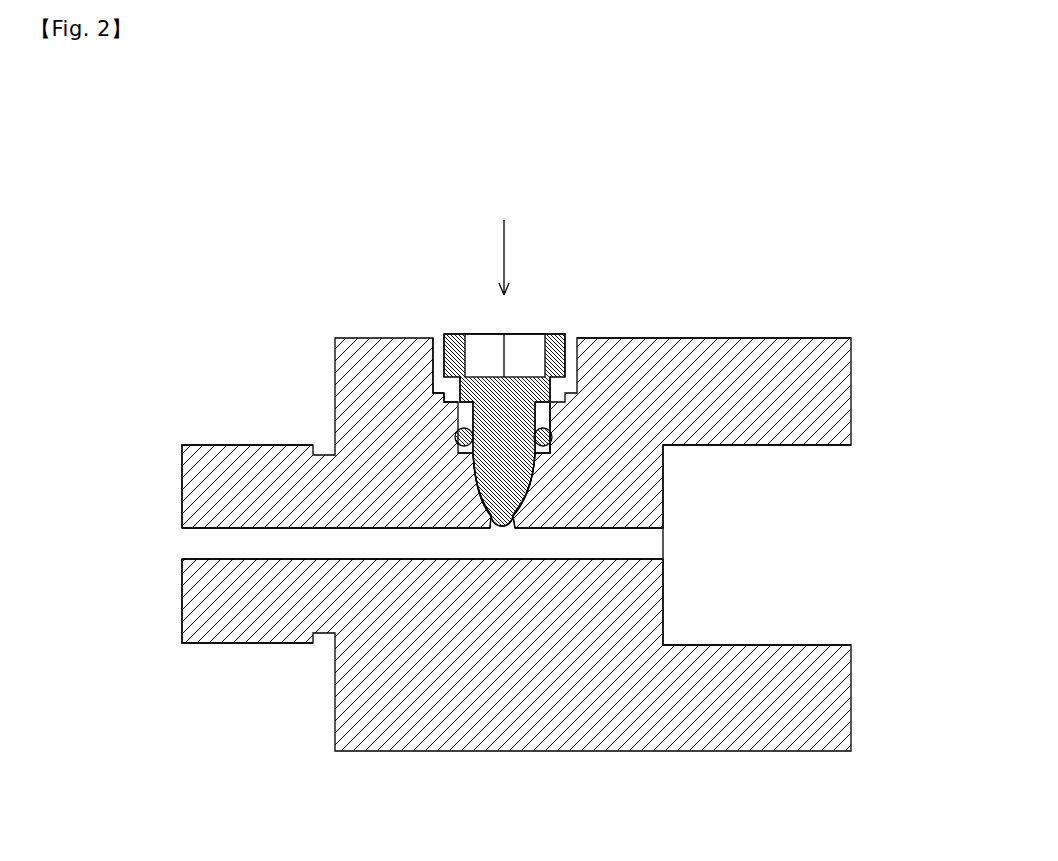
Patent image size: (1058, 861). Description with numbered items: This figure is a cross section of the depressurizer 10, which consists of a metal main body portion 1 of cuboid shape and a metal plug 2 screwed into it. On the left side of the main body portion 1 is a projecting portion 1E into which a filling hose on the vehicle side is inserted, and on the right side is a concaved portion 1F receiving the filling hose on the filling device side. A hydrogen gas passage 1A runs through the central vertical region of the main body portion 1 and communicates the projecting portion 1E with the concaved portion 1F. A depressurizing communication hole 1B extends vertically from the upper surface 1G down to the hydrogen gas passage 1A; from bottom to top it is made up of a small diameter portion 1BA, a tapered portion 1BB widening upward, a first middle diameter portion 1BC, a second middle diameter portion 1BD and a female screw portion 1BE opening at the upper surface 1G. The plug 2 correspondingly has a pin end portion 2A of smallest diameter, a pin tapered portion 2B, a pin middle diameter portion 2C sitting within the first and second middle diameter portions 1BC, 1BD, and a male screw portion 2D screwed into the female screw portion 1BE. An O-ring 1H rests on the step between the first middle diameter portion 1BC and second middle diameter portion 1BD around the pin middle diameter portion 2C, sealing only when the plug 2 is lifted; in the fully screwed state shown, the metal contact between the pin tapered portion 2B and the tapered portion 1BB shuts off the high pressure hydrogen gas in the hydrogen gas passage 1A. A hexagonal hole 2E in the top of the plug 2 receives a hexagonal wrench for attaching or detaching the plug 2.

The depressurizer 10 is at (735, 237).
The main body portion 1 is at (803, 338).
The hydrogen gas passage 1A is at (386, 559).
The depressurizing communication hole 1B is at (485, 520).
The small diameter portion 1BA is at (508, 528).
The tapered portion 1BB is at (524, 470).
The first middle diameter portion 1BC is at (483, 465).
The second middle diameter portion 1BD is at (470, 394).
The female screw portion 1BE is at (454, 336).
The projecting portion 1E is at (218, 645).
The concaved portion 1F is at (782, 645).
The upper surface 1G is at (715, 338).
The O-ring 1H is at (552, 436).
The plug 2 is at (557, 336).
The pin end portion 2A is at (500, 530).
The pin tapered portion 2B is at (493, 480).
The pin middle diameter portion 2C is at (508, 412).
The male screw portion 2D is at (572, 388).
The hexagonal hole 2E is at (473, 350).